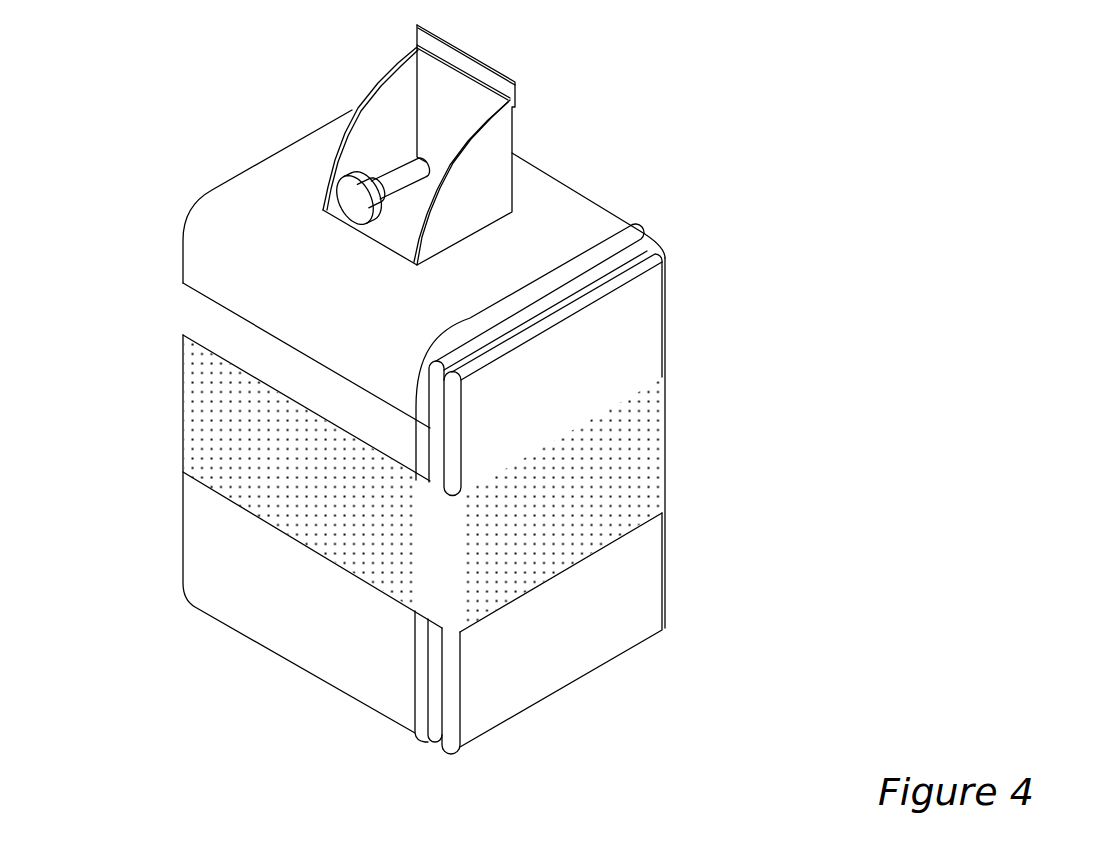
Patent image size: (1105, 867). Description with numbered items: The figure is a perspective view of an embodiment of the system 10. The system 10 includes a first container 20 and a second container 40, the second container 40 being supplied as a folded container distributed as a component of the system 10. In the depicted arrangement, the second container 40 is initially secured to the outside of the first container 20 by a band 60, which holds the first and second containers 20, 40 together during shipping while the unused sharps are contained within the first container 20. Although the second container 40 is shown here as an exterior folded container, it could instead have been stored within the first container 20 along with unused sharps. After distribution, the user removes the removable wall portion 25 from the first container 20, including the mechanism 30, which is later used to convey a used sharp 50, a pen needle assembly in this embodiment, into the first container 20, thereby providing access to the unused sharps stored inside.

The system 10 is at (222, 83).
The first container 20 is at (198, 312).
The removable wall portion 25 is at (207, 225).
The mechanism 30 is at (495, 148).
The second container 40 is at (613, 335).
The used sharp 50 is at (377, 183).
The band 60 is at (208, 422).